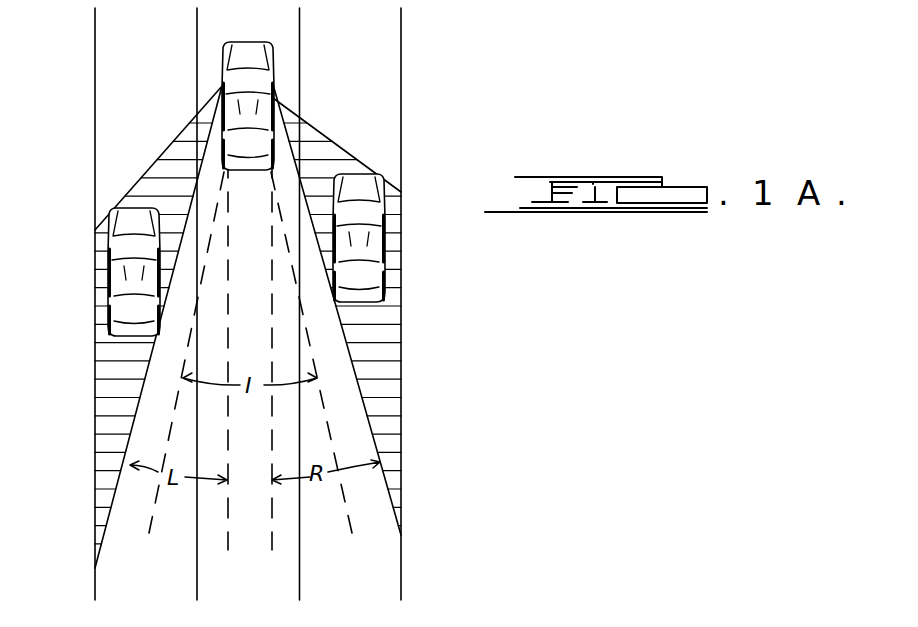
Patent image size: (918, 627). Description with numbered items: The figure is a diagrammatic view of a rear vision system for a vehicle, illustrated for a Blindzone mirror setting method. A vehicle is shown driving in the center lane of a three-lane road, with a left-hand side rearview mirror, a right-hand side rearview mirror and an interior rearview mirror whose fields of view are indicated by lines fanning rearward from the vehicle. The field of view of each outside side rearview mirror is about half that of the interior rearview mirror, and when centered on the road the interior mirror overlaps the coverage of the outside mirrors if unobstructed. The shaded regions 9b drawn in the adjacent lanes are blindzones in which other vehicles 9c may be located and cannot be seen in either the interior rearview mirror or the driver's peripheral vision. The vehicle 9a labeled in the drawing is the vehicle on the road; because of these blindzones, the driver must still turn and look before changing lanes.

The preceding vehicle in own lane 9a is at (253, 60).
The shaded regions 9b is at (160, 173).
The other vehicles 9c is at (130, 277).